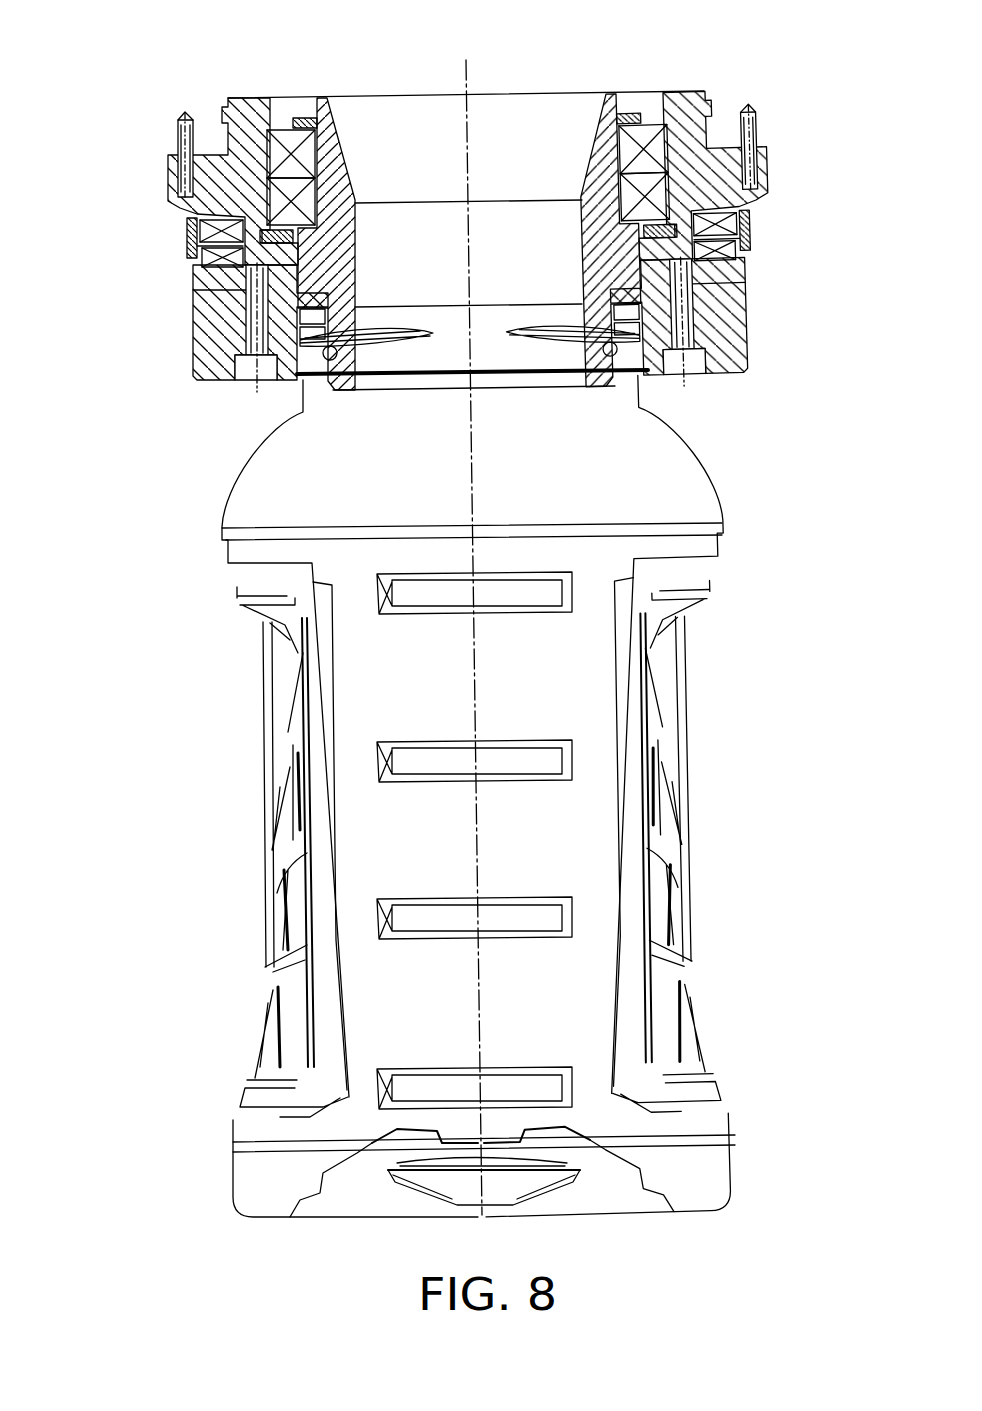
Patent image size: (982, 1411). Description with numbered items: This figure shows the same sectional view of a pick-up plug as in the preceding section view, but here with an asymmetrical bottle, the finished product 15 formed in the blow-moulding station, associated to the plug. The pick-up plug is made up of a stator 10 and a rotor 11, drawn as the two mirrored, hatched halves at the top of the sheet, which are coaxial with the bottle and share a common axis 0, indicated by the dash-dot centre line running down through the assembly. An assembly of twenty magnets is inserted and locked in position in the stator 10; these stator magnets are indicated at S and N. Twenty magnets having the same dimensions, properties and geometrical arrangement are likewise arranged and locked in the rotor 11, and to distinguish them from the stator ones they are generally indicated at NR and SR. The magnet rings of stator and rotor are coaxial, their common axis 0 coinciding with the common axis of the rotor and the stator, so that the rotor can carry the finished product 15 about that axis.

The common axis 0 is at (468, 132).
The stator 10 is at (228, 117).
The rotor 11 is at (190, 337).
The finished product 15 is at (697, 456).
The stator magnet S is at (183, 215).
The stator magnet N is at (747, 200).
The rotor magnet NR is at (193, 287).
The rotor magnet SR is at (723, 253).